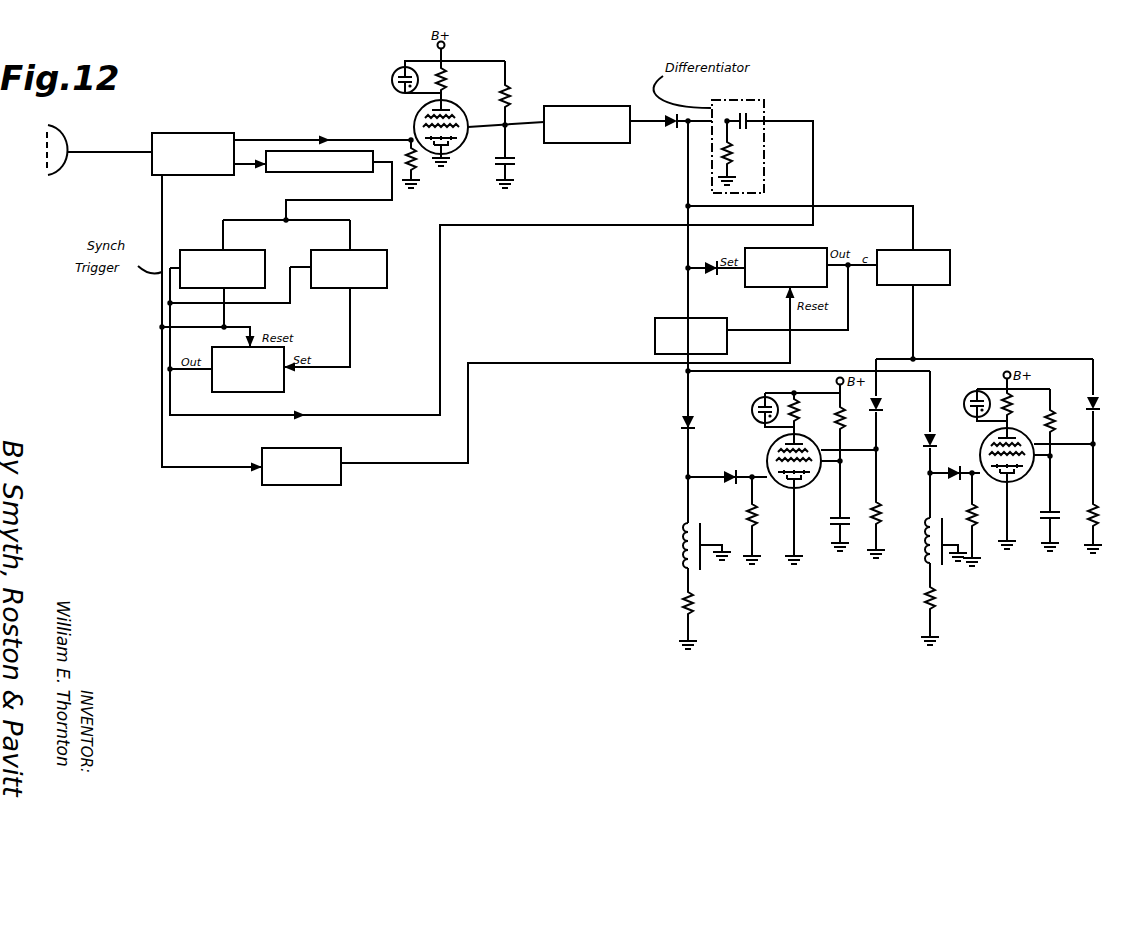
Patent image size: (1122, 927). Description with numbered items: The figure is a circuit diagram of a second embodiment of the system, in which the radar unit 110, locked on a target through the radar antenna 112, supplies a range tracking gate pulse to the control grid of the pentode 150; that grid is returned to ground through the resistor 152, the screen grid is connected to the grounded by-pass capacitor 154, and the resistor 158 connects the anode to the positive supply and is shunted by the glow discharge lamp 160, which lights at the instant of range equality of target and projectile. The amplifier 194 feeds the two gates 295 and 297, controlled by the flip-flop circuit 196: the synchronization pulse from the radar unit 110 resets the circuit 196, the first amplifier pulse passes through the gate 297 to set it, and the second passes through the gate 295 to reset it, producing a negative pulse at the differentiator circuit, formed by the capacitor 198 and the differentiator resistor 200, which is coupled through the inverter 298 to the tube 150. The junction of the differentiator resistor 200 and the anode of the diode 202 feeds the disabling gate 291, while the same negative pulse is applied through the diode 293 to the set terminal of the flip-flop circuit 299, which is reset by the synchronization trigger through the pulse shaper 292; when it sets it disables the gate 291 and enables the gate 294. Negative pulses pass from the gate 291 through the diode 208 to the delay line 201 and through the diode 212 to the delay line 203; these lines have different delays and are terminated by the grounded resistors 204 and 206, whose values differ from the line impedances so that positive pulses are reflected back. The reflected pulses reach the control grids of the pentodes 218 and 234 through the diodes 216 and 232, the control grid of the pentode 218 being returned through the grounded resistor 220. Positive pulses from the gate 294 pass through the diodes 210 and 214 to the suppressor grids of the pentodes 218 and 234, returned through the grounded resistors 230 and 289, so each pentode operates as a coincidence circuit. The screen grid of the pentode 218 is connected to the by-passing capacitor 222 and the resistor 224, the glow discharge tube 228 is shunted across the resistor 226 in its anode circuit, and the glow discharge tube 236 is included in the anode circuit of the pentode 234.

The radar antenna 112 is at (64, 134).
The radar unit 110 is at (165, 133).
The amplifier 194 is at (298, 172).
The gate 295 is at (208, 238).
The gate 297 is at (396, 240).
The flip-flop circuit 196 is at (282, 387).
The pulse shaper 292 is at (341, 452).
The pentode 150 is at (415, 124).
The resistor 158 is at (448, 80).
The glow discharge lamp 160 is at (392, 80).
The resistor 152 is at (414, 165).
The by-pass capacitor 154 is at (497, 166).
The inverter 298 is at (626, 106).
The diode 202 is at (676, 131).
The capacitor 198 is at (749, 114).
The differentiator resistor 200 is at (731, 148).
The diode 293 is at (712, 262).
The flip-flop circuit 299 is at (822, 248).
The gate 294 is at (950, 267).
The disabling gate 291 is at (655, 333).
The diode 208 is at (685, 420).
The diode 210 is at (882, 408).
The resistor 230 is at (873, 515).
The diode 216 is at (733, 471).
The pentode 218 is at (778, 455).
The resistor 220 is at (749, 508).
The resistor 226 is at (798, 414).
The glow discharge tube 228 is at (752, 408).
The resistor 224 is at (836, 418).
The by-passing capacitor 222 is at (834, 512).
The delay line 201 is at (686, 548).
The grounded resistor 204 is at (697, 606).
The diode 212 is at (926, 437).
The diode 232 is at (958, 480).
The pentode 234 is at (981, 453).
The glow discharge tube 236 is at (965, 398).
The diode 214 is at (1086, 408).
The resistor 289 is at (1088, 512).
The delay line 203 is at (928, 552).
The grounded resistor 206 is at (937, 603).